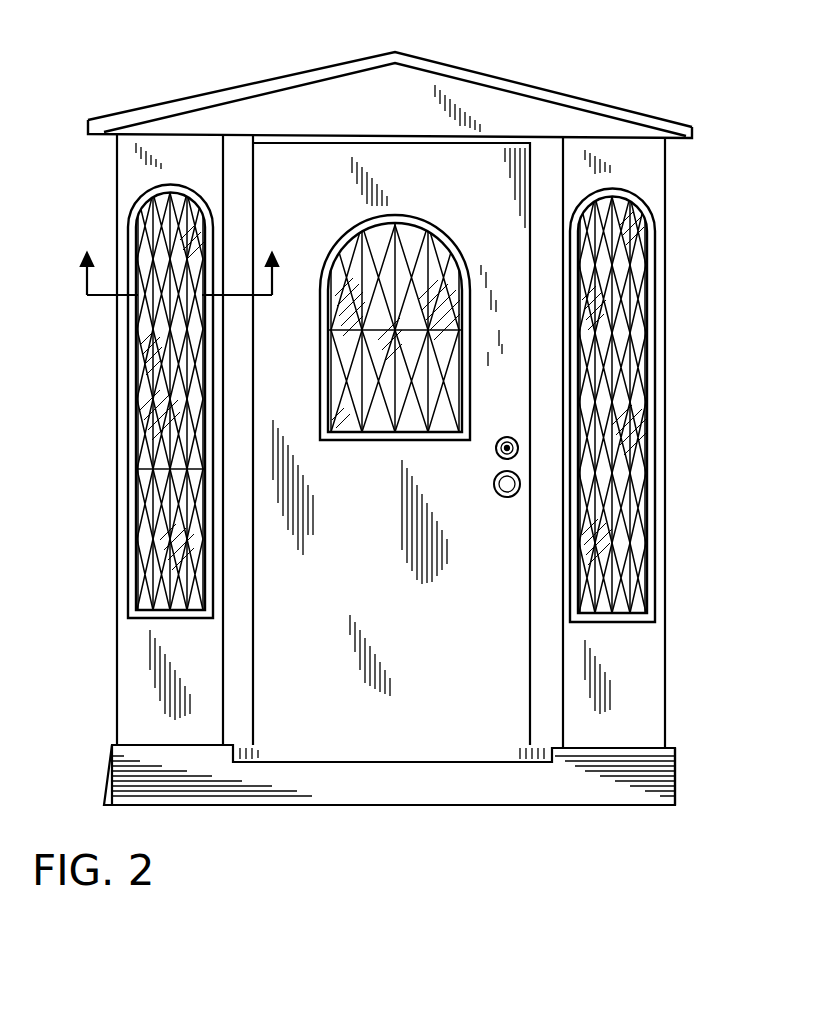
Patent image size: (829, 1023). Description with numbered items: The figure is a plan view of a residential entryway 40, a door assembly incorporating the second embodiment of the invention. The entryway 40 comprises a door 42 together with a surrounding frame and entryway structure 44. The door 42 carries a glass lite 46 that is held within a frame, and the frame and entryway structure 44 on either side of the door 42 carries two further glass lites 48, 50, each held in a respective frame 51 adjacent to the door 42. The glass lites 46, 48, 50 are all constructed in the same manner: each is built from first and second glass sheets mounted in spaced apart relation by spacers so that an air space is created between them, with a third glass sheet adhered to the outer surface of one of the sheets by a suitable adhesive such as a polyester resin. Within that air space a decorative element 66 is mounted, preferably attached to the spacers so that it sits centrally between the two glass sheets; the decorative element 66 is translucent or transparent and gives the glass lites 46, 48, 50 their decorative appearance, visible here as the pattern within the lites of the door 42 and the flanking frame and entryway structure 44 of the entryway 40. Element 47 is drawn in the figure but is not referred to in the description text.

The entryway 40 is at (386, 416).
The door 42 is at (376, 520).
The frame and entryway structure 44 is at (614, 156).
The glass lite 46 is at (412, 347).
The window frame 47 is at (429, 442).
The glass lite 48 is at (131, 373).
The glass lite 50 is at (648, 297).
The frames 51 is at (131, 517).
The decorative element 66 is at (138, 481).